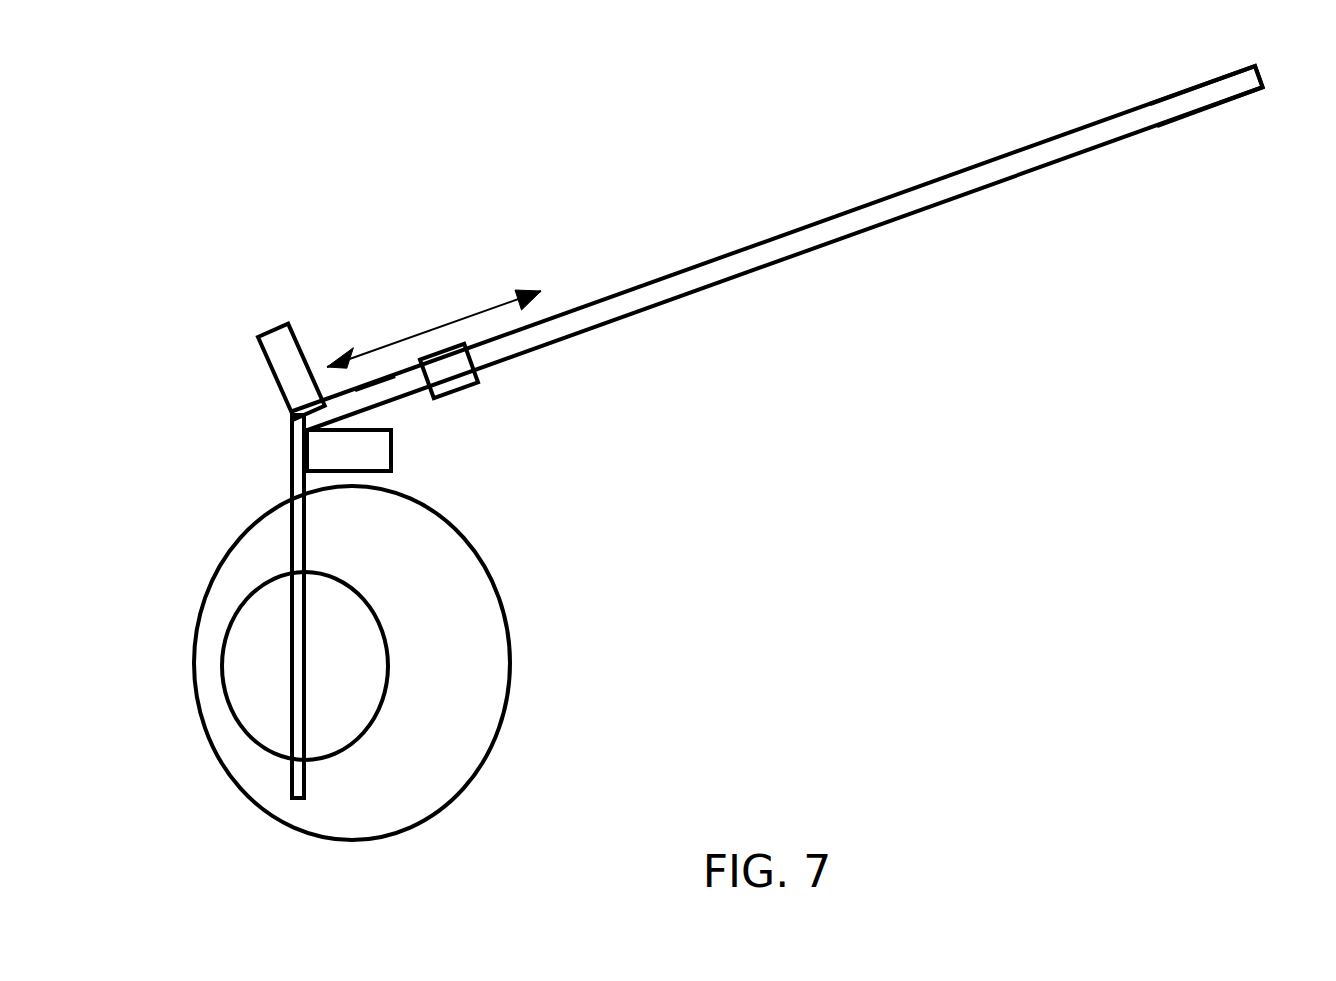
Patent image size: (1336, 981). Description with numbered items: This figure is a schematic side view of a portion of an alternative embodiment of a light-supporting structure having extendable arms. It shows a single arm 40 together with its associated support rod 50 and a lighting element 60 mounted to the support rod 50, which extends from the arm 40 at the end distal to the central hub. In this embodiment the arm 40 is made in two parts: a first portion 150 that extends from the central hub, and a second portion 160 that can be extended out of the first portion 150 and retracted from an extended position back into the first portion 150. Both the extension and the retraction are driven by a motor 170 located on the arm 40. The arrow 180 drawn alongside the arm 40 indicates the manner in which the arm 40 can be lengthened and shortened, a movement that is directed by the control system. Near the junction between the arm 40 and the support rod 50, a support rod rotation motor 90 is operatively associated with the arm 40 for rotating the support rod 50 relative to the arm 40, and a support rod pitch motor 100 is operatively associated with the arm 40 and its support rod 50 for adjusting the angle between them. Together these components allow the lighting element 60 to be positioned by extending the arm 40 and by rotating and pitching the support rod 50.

The arm 40 is at (765, 273).
The support rod 50 is at (298, 537).
The lighting element 60 is at (492, 677).
The support rod rotation motor 90 is at (268, 363).
The support rod pitch motor 100 is at (372, 452).
The first portion 150 is at (1060, 152).
The second portion 160 is at (383, 398).
The motor 170 is at (450, 345).
The arrow 180 is at (500, 302).